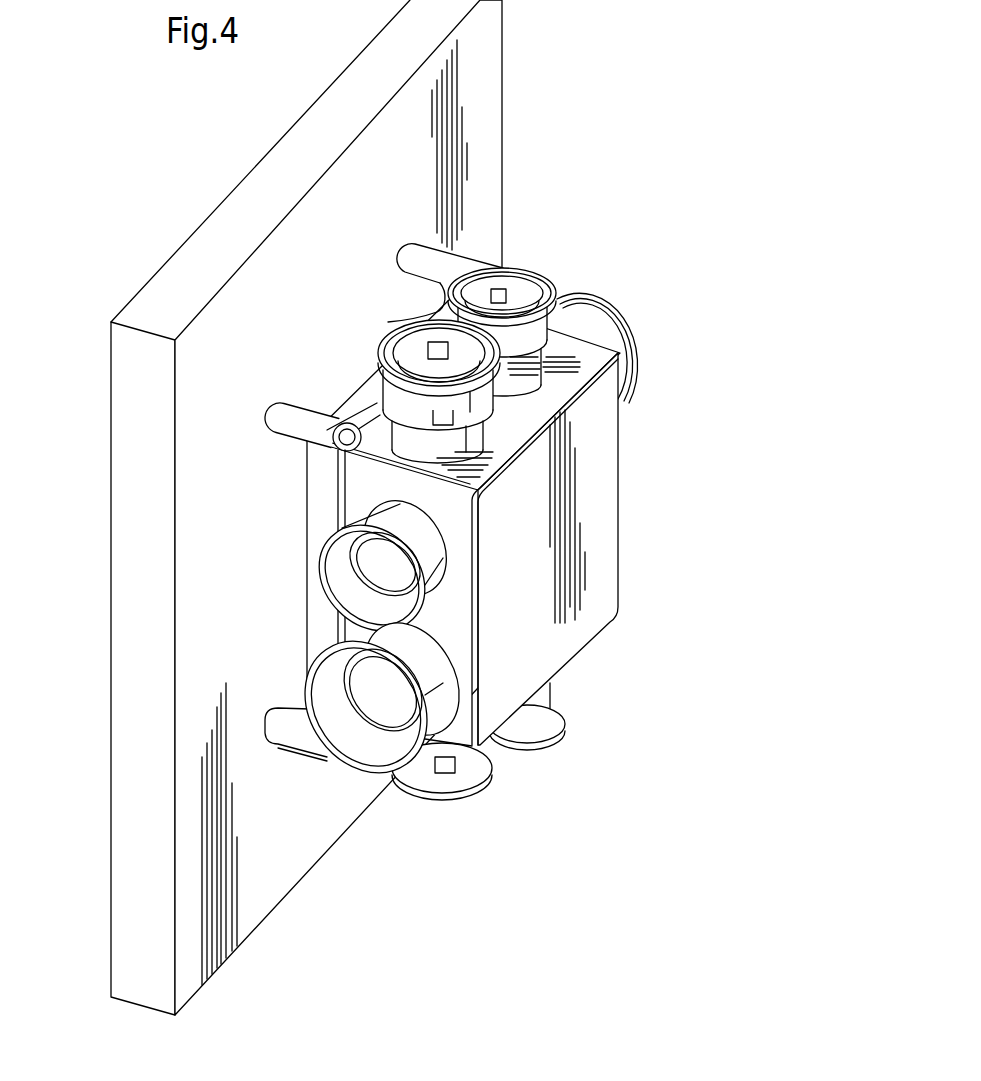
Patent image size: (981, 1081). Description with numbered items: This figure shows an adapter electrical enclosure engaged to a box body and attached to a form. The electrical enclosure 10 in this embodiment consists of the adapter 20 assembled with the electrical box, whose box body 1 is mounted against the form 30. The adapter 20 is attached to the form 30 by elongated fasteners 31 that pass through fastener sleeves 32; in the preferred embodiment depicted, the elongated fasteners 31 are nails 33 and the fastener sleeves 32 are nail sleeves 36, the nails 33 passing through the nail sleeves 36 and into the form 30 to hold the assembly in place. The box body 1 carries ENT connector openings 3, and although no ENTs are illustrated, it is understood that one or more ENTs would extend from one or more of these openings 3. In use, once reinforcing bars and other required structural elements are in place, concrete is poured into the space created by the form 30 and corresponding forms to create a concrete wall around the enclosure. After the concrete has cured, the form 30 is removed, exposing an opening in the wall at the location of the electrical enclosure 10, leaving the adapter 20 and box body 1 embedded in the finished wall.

The box body 1 is at (567, 620).
The ENT connector openings 3 is at (644, 318).
The electrical enclosure 10 is at (318, 632).
The adapter 20 is at (318, 524).
The form 30 is at (142, 742).
The elongated fasteners 31 is at (297, 398).
The fastener sleeves 32 is at (266, 442).
The nails 33 is at (345, 425).
The nail sleeves 36 is at (280, 411).